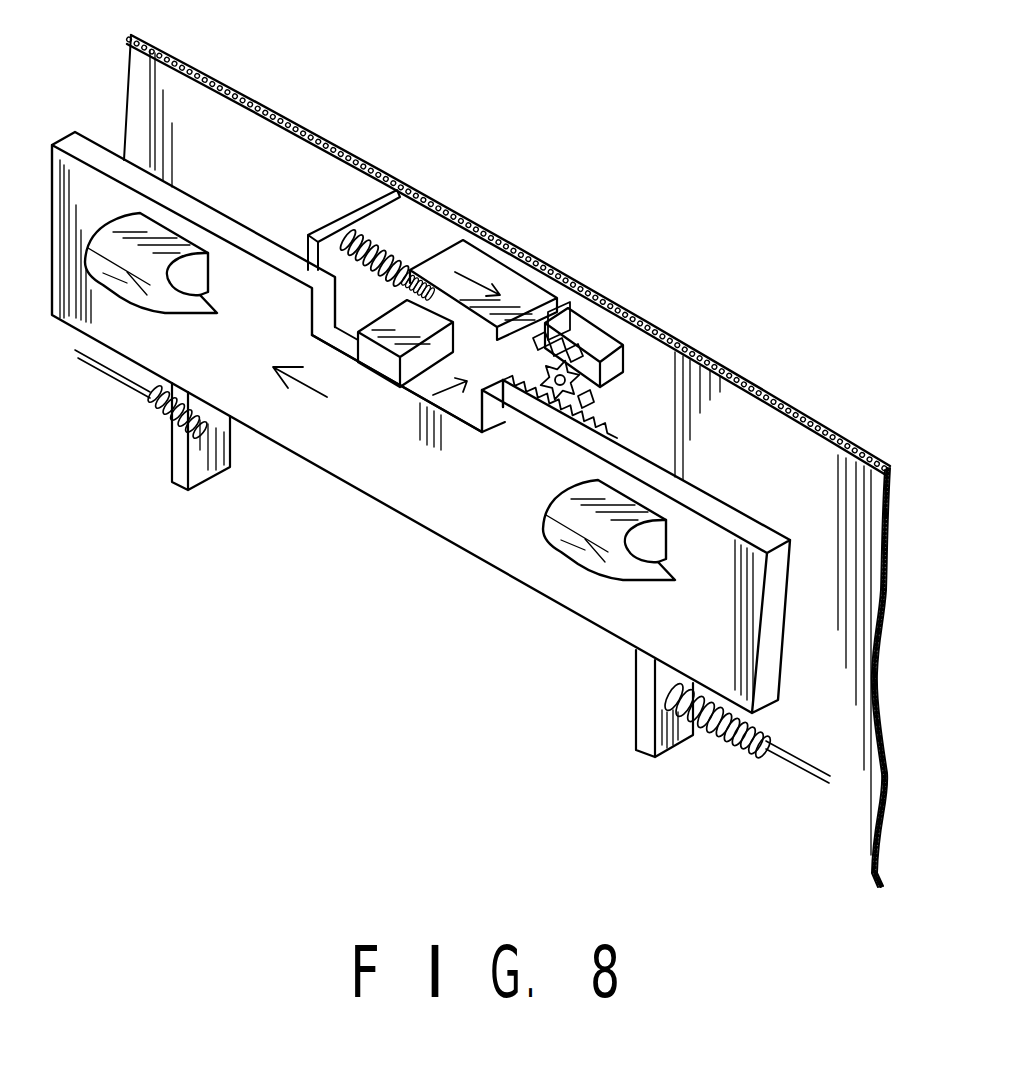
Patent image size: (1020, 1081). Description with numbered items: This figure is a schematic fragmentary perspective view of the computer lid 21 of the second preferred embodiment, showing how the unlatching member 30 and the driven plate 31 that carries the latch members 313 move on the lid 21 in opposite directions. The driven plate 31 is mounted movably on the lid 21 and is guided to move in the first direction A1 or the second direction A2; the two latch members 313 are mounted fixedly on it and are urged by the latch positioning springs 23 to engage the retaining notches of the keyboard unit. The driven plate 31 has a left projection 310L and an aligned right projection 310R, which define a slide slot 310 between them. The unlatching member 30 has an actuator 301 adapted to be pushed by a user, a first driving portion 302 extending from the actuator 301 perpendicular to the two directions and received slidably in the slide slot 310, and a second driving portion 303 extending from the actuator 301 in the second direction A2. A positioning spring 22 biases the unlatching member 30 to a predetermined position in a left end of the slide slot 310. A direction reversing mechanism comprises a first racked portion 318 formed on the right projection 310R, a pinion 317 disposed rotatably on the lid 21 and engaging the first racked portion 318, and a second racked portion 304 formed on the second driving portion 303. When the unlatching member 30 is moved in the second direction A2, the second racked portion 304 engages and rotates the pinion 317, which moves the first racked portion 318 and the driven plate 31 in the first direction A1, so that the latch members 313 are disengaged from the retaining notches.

The computer lid 21 is at (890, 722).
The positioning spring 22 is at (401, 272).
The latch positioning springs 23 is at (162, 418).
The unlatching member 30 is at (400, 465).
The driven plate 31 is at (218, 205).
The actuator 301 is at (494, 288).
The first driving portion 302 is at (378, 362).
The second driving portion 303 is at (566, 325).
The second racked portion 304 is at (600, 353).
The slide slot 310 is at (400, 465).
The left projection 310L is at (260, 250).
The right projection 310R is at (567, 427).
The latch members 313 is at (127, 273).
The pinion 317 is at (575, 375).
The first racked portion 318 is at (538, 388).
The first direction A1 is at (463, 270).
The second direction A2 is at (303, 392).